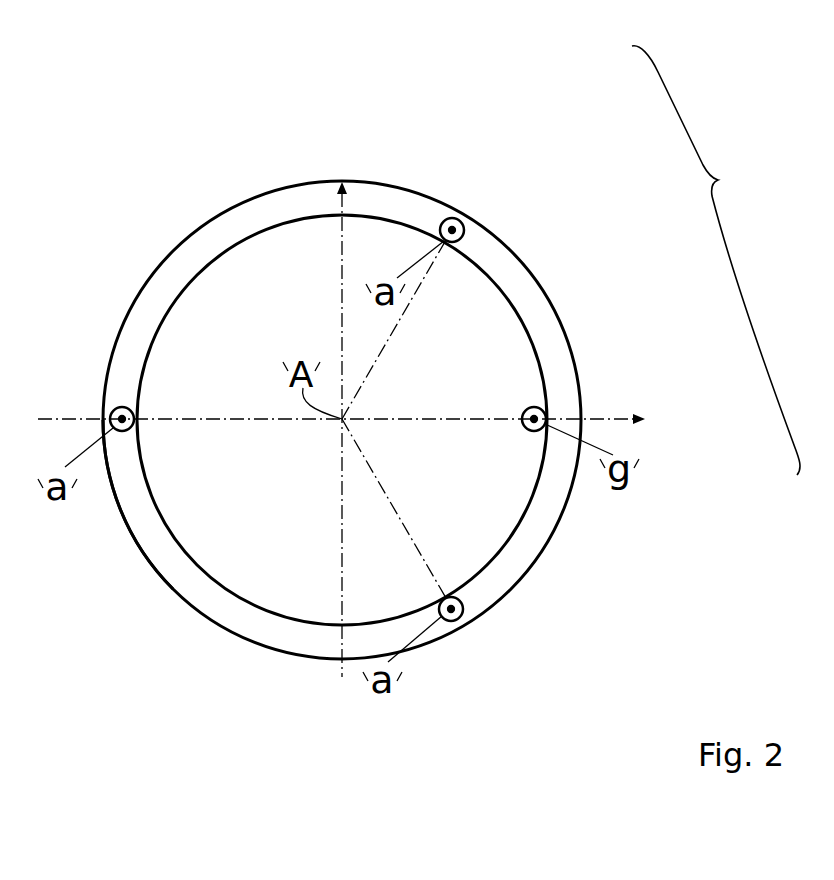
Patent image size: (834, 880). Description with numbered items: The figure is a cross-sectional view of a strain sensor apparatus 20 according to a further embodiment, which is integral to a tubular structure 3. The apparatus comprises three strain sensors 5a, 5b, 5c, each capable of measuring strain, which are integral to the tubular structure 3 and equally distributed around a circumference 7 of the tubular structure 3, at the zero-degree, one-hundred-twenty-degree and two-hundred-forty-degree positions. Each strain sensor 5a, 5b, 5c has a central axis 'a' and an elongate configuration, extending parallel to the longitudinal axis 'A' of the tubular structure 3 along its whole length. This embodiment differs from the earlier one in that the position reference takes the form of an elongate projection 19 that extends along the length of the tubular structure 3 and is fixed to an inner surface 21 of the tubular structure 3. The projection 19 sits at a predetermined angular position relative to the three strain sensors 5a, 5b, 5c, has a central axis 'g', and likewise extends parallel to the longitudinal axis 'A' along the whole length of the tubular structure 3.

The tubular structure 3 is at (180, 242).
The strain sensor 5a is at (462, 604).
The strain sensor 5b is at (118, 414).
The strain sensor 5c is at (461, 226).
The circumference 7 is at (155, 575).
The elongate projection 19 is at (543, 411).
The strain sensor apparatus 20 is at (716, 260).
The inner surface 21 is at (246, 594).